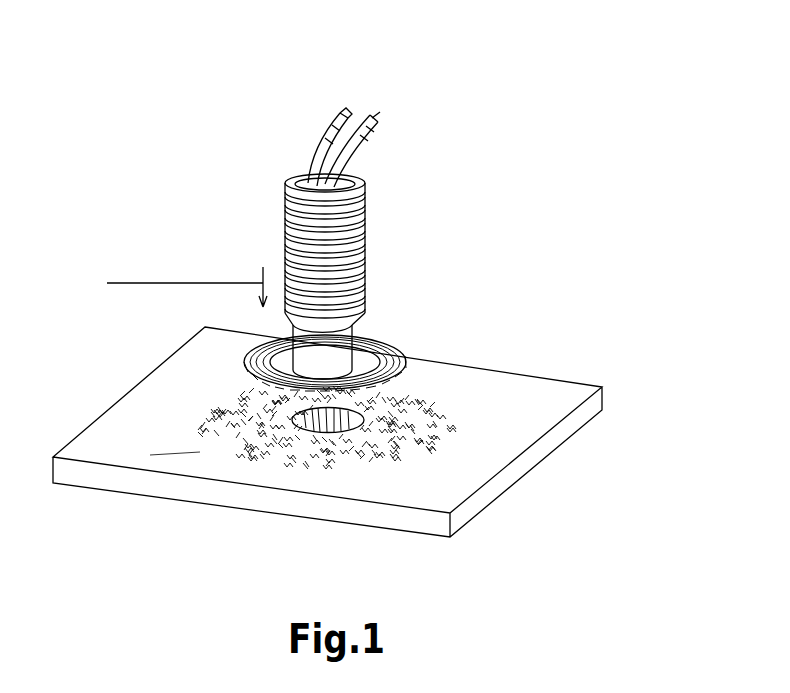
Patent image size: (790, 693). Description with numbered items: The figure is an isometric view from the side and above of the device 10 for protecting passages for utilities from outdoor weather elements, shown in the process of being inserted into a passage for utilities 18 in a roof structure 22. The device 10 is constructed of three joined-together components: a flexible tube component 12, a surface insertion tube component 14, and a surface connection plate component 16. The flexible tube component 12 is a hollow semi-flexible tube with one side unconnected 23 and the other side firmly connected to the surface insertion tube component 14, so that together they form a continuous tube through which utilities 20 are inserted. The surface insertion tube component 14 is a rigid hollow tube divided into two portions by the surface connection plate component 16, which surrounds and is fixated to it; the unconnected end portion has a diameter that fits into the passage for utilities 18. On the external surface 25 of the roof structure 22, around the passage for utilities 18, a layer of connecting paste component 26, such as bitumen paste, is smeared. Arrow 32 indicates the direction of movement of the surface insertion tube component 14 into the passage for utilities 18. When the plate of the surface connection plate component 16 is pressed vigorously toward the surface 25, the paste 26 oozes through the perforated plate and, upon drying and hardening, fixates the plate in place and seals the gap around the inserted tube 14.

The device 10 is at (440, 207).
The flexible tube component 12 is at (283, 218).
The surface insertion tube component 14 is at (335, 350).
The surface connection plate component 16 is at (408, 358).
The passage for utilities 18 is at (367, 425).
The utilities 20 is at (377, 112).
The roof structure 22 is at (458, 525).
The unconnected side 23 is at (308, 180).
The external surface 25 is at (175, 463).
The connecting paste component 26 is at (292, 438).
The arrow 32 is at (162, 287).